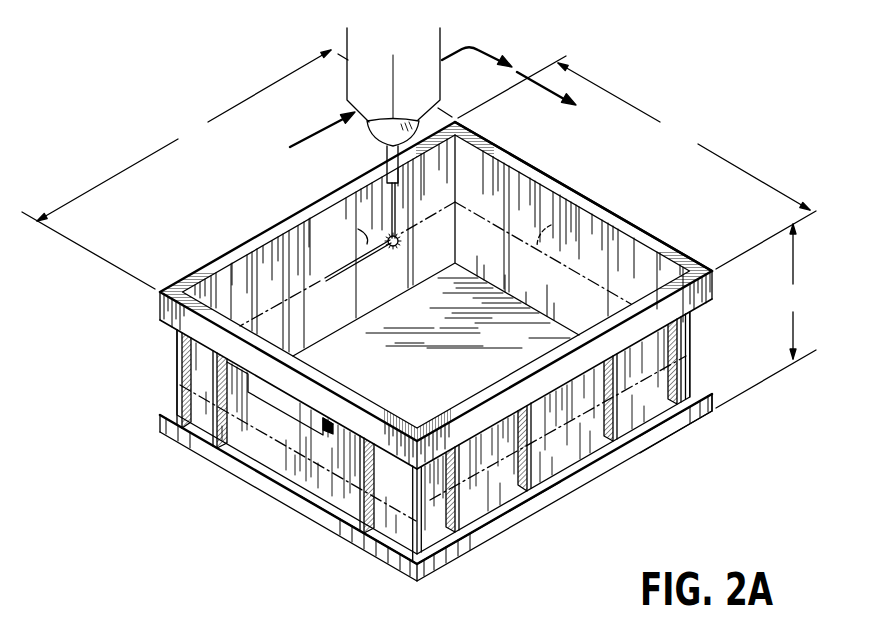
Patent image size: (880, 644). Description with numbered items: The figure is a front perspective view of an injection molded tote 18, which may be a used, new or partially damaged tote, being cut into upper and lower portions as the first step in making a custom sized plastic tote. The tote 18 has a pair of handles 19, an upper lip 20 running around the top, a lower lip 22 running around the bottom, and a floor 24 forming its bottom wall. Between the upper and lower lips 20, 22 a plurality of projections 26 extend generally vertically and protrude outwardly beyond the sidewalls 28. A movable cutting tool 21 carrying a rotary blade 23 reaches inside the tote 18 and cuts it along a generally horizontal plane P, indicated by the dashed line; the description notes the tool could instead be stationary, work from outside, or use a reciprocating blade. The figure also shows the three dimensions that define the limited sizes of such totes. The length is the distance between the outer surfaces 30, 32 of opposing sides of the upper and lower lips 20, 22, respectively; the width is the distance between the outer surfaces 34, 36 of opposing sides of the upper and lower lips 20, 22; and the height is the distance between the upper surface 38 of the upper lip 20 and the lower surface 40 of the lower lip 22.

The injection molded tote 18 is at (80, 295).
The handles 19 is at (288, 408).
The upper lip 20 is at (180, 279).
The cutting tool 21 is at (383, 48).
The lower lip 22 is at (155, 422).
The rotary blade 23 is at (396, 250).
The floor 24 is at (426, 376).
The projections 26 is at (213, 427).
The sidewalls 28 is at (307, 473).
The outer surface of upper lip 30 is at (557, 180).
The outer surface of lower lip 32 is at (362, 547).
The outer surface of upper lip 34 is at (257, 233).
The outer surface of lower lip 36 is at (688, 419).
The upper surface of upper lip 38 is at (658, 238).
The lower surface of lower lip 40 is at (518, 524).